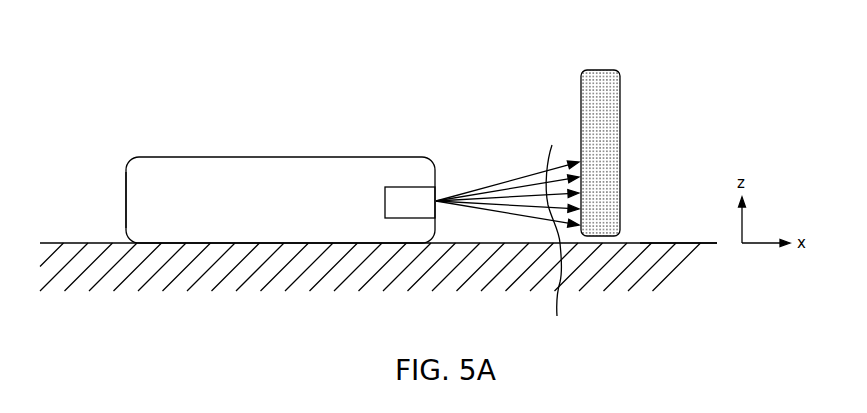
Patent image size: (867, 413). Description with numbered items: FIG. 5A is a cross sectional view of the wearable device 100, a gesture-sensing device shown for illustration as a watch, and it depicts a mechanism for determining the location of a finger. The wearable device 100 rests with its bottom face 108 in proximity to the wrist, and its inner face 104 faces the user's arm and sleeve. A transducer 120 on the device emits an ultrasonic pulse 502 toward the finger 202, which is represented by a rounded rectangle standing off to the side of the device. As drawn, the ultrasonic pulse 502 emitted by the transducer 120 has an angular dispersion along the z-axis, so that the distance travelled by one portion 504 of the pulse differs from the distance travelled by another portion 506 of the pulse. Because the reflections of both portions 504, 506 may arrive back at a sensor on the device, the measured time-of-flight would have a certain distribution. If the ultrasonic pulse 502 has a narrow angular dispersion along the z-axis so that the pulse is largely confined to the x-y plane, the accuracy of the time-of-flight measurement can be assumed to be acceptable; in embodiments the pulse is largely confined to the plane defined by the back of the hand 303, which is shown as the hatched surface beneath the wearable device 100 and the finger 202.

The wearable device 100 is at (168, 154).
The inner face 104 is at (114, 197).
The bottom face 108 is at (202, 253).
The transducer 120 is at (397, 194).
The finger 202 is at (606, 78).
The back of the hand 303 is at (643, 243).
The ultrasonic pulse 502 is at (482, 222).
The portion of the ultrasonic pulse 504 is at (558, 290).
The portion of the ultrasonic pulse 506 is at (546, 182).